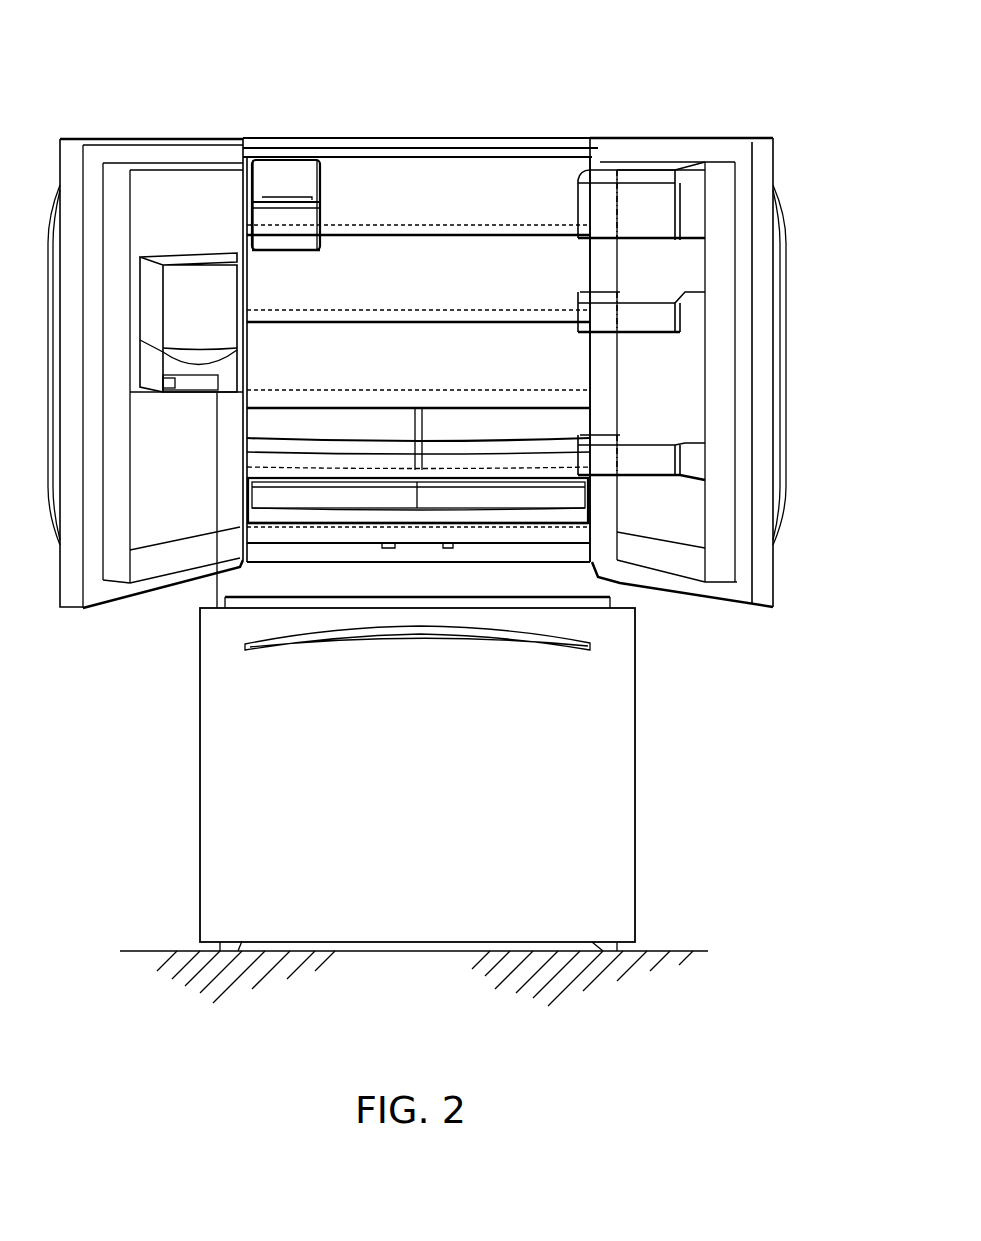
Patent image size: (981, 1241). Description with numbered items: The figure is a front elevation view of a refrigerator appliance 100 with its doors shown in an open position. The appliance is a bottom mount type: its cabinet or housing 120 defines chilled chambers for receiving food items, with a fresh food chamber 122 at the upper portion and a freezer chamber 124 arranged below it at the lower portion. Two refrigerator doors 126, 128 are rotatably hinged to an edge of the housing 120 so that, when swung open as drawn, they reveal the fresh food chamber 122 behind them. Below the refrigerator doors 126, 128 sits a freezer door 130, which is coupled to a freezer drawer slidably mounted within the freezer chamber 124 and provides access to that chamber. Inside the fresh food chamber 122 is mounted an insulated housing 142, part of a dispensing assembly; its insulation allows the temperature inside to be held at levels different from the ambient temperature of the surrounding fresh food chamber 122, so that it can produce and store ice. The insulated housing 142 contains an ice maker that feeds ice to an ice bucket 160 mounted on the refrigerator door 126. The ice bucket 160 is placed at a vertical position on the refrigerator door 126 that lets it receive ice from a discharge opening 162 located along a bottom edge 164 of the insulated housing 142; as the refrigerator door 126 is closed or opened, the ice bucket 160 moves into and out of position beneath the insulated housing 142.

The refrigerator appliance 100 is at (411, 479).
The housing 120 is at (200, 848).
The fresh food chamber 122 is at (445, 175).
The freezer chamber 124 is at (602, 723).
The refrigerator door 126 is at (112, 135).
The refrigerator door 128 is at (675, 137).
The freezer door 130 is at (600, 823).
The insulated housing 142 is at (287, 180).
The ice bucket 160 is at (188, 282).
The discharge opening 162 is at (293, 255).
The bottom edge 164 is at (281, 255).